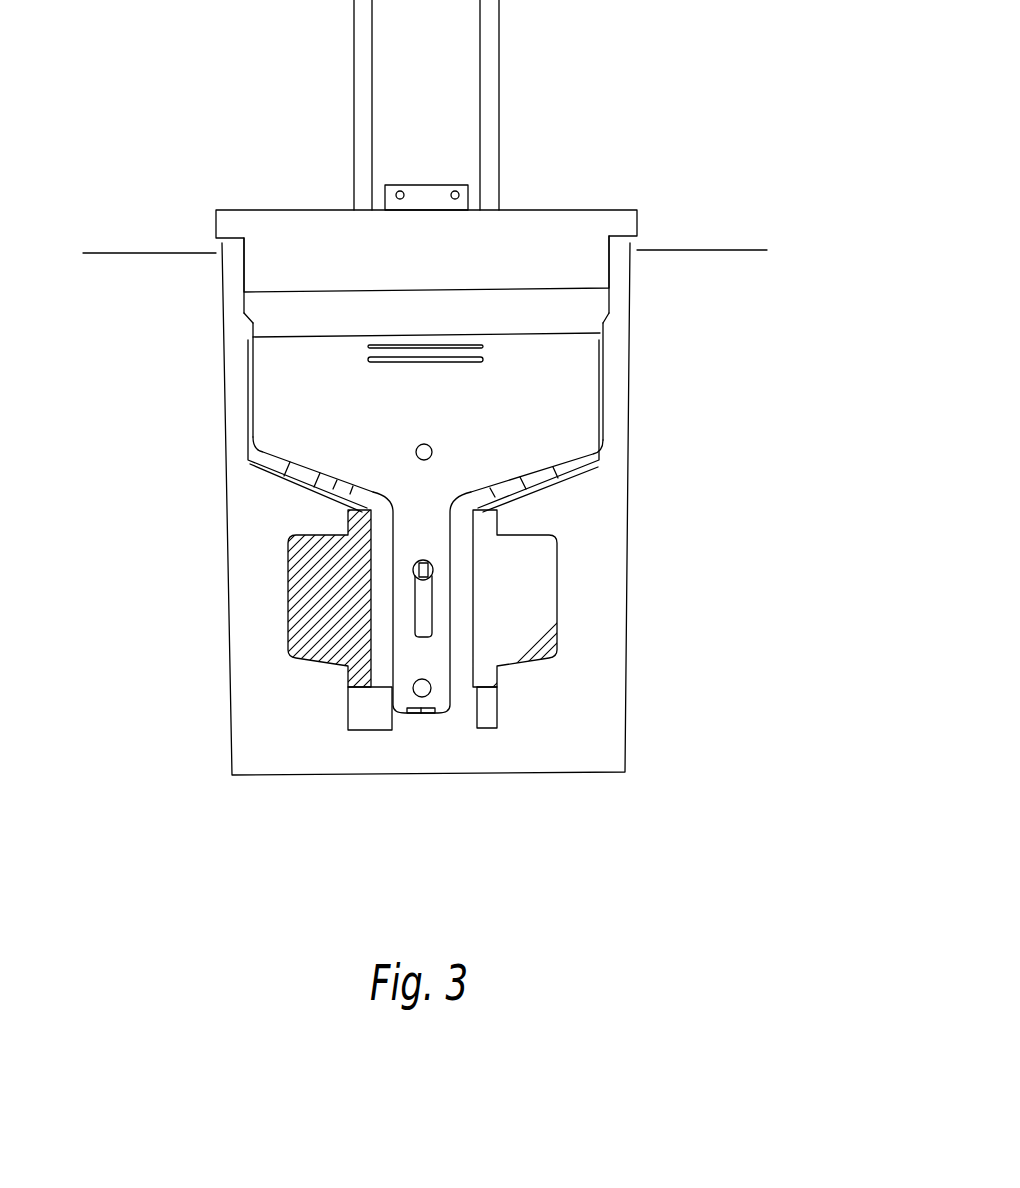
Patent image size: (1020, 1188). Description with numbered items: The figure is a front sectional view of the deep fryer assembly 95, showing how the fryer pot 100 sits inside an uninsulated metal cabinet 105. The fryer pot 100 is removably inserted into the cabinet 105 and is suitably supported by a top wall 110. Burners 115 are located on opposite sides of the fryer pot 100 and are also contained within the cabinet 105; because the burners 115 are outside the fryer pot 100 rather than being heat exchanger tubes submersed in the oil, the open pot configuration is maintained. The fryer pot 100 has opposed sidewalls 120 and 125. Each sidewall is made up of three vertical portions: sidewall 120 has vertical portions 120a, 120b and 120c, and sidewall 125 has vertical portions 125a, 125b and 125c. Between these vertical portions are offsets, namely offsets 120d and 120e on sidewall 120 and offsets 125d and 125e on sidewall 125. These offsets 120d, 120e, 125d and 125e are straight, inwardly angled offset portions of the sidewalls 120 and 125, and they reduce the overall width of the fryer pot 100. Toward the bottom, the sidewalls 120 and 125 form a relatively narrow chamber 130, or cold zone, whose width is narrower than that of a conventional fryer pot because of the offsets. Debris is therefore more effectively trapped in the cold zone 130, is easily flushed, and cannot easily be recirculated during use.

The deep fryer assembly 95 is at (610, 88).
The fryer pot 100 is at (517, 238).
The uninsulated metal cabinet 105 is at (232, 680).
The top wall 110 is at (696, 250).
The burners 115 is at (535, 632).
The sidewall 120 is at (248, 451).
The vertical portion 120a is at (244, 275).
The vertical portion 120b is at (252, 360).
The vertical portion 120c is at (393, 563).
The offset 120d is at (253, 313).
The offset 120e is at (292, 478).
The sidewall 125 is at (608, 275).
The vertical portion 125a is at (608, 307).
The vertical portion 125b is at (587, 390).
The vertical portion 125c is at (450, 597).
The offset 125d is at (603, 318).
The offset 125e is at (553, 467).
The chamber (cold zone) 130 is at (440, 695).